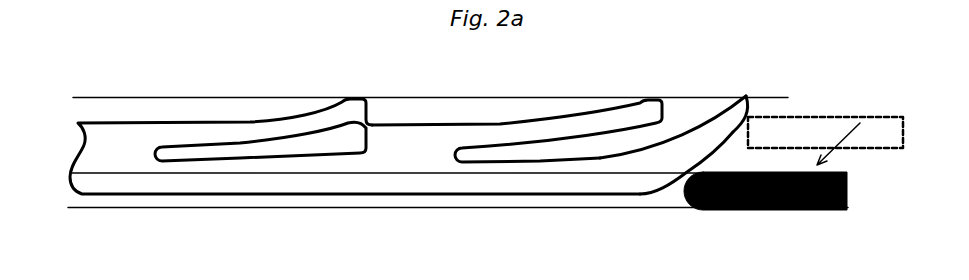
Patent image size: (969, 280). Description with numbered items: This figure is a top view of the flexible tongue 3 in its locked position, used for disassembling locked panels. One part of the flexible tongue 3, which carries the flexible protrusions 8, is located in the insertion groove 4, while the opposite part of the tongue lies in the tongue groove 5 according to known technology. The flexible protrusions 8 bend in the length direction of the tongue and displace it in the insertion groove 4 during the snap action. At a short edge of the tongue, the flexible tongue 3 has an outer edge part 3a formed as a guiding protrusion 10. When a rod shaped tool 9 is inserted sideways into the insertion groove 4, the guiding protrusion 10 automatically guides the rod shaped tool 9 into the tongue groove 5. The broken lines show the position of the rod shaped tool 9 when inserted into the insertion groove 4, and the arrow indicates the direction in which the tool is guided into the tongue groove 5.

The flexible tongue 3 is at (95, 150).
The outer edge part 3a is at (716, 136).
The insertion groove 4 is at (198, 113).
The tongue groove 5 is at (572, 204).
The flexible protrusions 8 is at (578, 128).
The rod shaped tool 9 is at (862, 148).
The guiding protrusion 10 is at (732, 119).